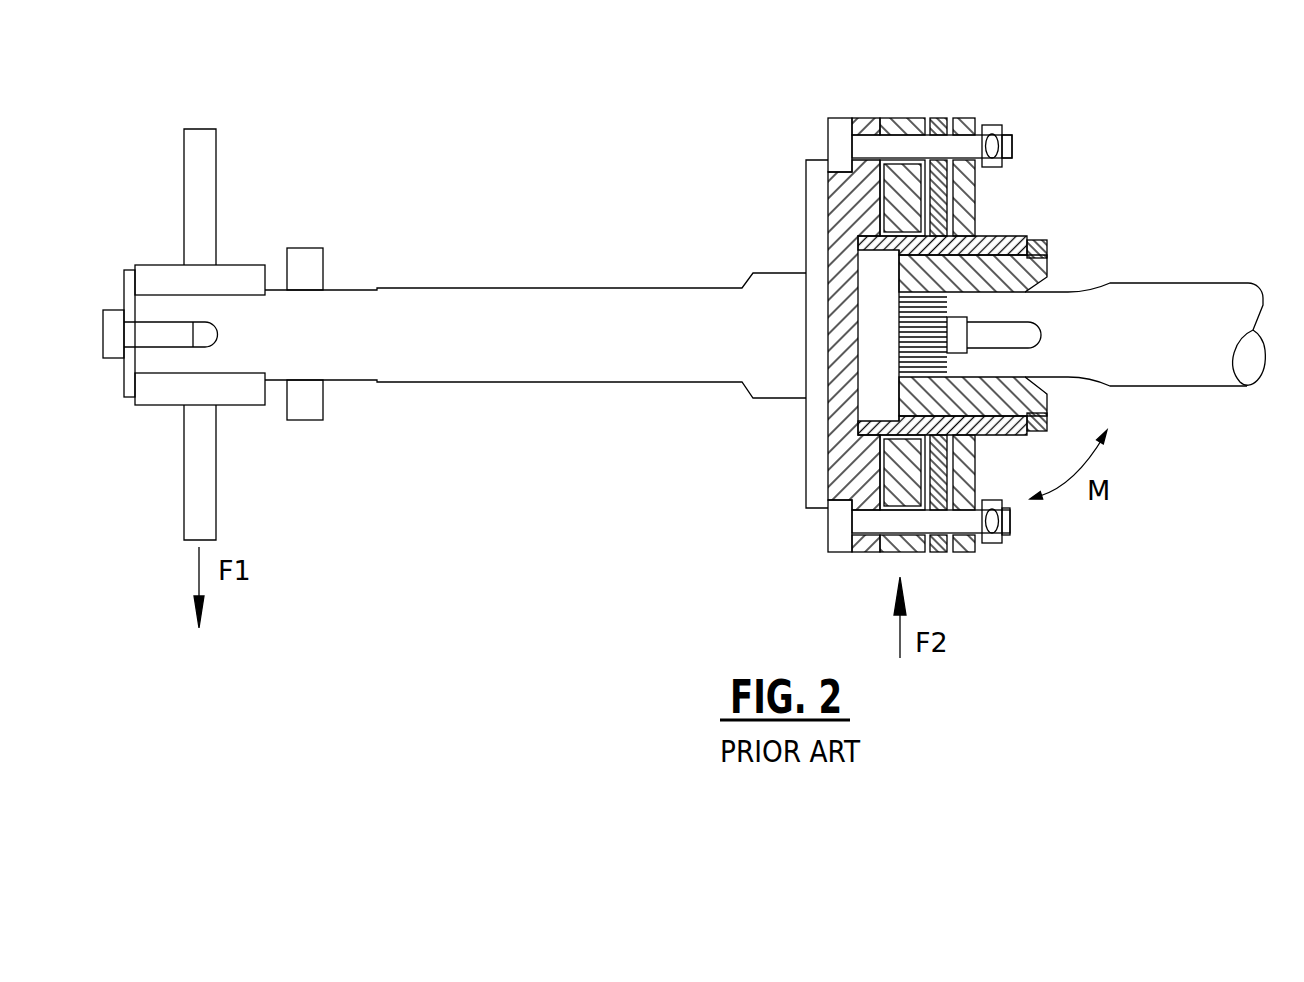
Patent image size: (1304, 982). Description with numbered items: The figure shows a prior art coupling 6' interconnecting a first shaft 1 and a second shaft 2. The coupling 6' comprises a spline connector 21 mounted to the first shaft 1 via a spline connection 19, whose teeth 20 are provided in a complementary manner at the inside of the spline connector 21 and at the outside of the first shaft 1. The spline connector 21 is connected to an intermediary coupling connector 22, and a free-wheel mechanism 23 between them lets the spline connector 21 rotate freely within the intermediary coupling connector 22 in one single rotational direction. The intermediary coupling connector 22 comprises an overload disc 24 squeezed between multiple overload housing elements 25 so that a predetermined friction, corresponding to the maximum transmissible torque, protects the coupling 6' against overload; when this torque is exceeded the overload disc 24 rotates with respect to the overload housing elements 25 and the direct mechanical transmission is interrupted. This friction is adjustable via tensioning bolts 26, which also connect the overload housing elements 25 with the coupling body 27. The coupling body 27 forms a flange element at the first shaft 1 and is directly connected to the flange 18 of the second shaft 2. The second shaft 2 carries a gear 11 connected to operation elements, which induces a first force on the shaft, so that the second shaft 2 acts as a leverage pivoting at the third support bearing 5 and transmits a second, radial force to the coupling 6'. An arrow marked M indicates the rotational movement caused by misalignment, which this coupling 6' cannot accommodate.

The first shaft 1 is at (1184, 365).
The second shaft 2 is at (530, 307).
The third support bearing 5 is at (300, 258).
The coupling 6' is at (706, 611).
The gear 11 is at (203, 168).
The flange 18 is at (806, 453).
The spline connection 19 is at (1027, 292).
The teeth 20 is at (917, 330).
The spline connector 21 is at (1037, 395).
The intermediary coupling connector 22 is at (1010, 245).
The free-wheel mechanism 23 is at (1045, 256).
The overload disc 24 is at (932, 177).
The overload housing elements 25 is at (900, 175).
The tensioning bolts 26 is at (882, 152).
The coupling body 27 is at (843, 192).